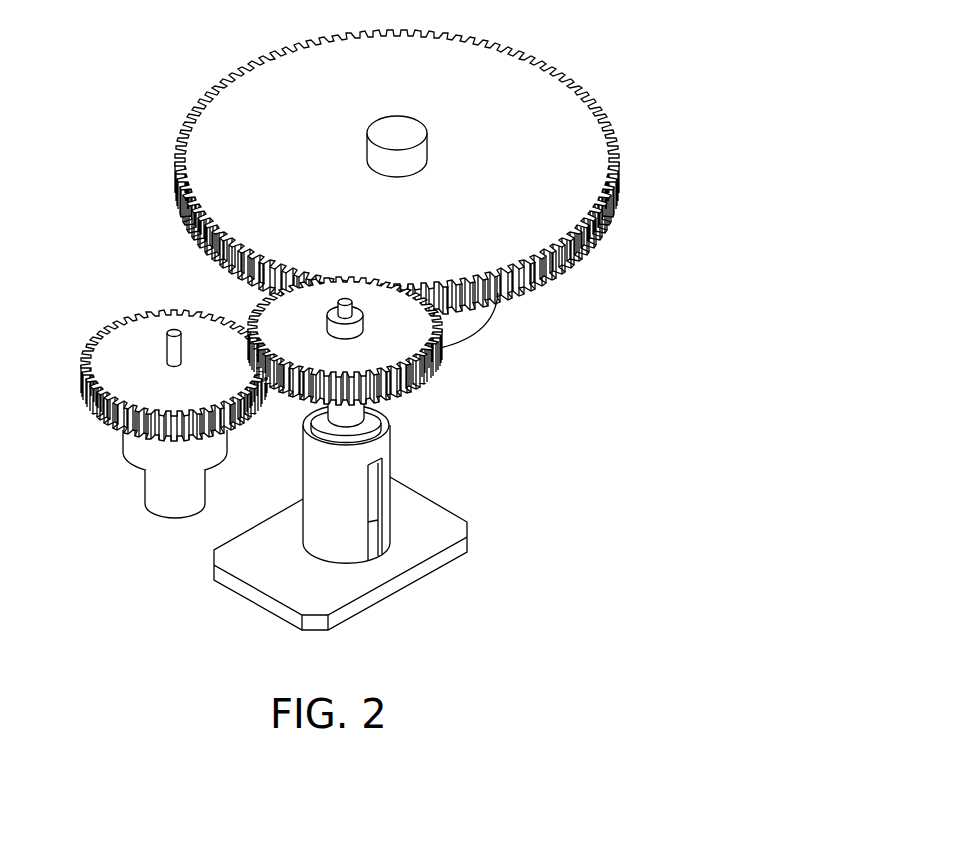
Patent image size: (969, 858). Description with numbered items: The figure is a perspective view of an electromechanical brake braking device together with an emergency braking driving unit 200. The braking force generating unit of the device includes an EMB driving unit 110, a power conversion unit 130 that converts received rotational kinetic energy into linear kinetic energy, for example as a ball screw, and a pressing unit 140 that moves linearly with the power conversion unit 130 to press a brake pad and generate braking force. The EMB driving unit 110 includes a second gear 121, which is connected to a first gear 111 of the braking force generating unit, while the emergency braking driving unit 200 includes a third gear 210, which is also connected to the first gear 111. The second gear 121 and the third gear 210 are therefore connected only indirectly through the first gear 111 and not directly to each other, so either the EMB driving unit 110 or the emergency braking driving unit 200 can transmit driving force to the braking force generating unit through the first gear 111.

The third gear 210 is at (553, 106).
The emergency braking driving unit 200 is at (483, 327).
The second gear 121 is at (392, 352).
The power conversion unit 130 is at (394, 457).
The pressing unit 140 is at (444, 507).
The first gear 111 is at (110, 340).
The EMB driving unit 110 is at (127, 463).